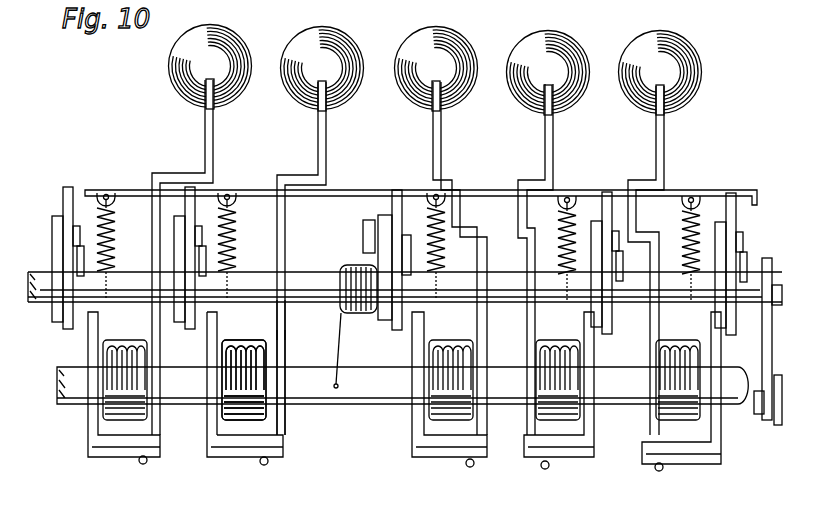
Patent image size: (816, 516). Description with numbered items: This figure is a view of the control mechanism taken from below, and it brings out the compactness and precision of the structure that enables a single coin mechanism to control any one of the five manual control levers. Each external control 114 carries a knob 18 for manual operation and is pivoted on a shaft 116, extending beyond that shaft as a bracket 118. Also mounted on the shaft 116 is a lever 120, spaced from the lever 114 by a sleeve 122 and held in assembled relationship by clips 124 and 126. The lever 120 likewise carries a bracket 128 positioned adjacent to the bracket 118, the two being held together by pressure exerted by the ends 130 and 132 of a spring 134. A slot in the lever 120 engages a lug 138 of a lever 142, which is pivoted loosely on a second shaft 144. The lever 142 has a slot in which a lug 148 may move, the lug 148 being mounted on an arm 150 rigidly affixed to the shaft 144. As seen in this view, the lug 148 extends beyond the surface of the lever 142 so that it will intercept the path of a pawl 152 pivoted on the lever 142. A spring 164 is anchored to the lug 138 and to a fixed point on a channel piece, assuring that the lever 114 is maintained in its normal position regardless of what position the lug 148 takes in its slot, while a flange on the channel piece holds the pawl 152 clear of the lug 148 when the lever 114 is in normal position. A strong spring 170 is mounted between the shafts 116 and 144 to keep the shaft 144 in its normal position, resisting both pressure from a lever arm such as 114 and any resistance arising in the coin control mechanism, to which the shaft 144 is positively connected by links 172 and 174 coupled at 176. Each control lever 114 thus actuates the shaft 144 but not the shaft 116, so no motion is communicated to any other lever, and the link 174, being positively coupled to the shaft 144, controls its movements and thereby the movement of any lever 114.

The knob 18 is at (418, 45).
The external control 114 is at (327, 139).
The shaft 116 is at (370, 402).
The bracket 118 is at (284, 431).
The lever 120 is at (207, 436).
The sleeve 122 is at (222, 350).
The clip 124 is at (207, 350).
The clip 126 is at (282, 362).
The bracket 128 is at (254, 458).
The spring end 130 is at (212, 456).
The spring end 132 is at (267, 464).
The spring 134 is at (275, 340).
The lug 138 is at (224, 330).
The lever 142 is at (190, 212).
The shaft 144 is at (313, 272).
The lug 148 is at (198, 226).
The arm 150 is at (165, 252).
The pawl 152 is at (234, 200).
The spring 164 is at (238, 244).
The spring 170 is at (356, 268).
The link 172 is at (762, 353).
The link 174 is at (776, 428).
The coupling 176 is at (757, 410).